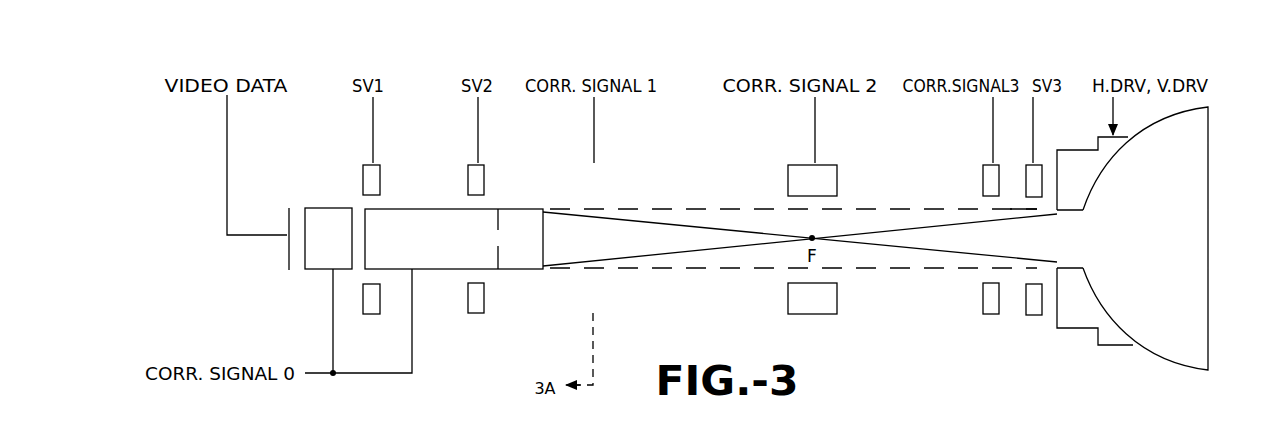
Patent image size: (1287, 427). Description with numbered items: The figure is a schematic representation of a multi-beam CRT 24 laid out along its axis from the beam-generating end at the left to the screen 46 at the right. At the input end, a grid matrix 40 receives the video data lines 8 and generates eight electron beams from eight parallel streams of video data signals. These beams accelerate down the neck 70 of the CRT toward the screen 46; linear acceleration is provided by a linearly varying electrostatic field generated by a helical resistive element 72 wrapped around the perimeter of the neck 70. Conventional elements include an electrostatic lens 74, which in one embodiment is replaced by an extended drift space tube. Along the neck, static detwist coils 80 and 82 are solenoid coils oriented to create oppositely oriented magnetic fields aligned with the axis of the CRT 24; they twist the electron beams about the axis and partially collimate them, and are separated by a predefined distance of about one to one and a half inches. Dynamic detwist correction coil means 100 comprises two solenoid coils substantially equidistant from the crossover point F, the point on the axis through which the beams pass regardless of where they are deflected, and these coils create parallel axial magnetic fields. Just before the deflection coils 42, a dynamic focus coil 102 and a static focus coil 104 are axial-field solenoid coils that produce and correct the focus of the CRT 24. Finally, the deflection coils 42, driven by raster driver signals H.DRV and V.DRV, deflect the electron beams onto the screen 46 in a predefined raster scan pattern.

The video data line 8 is at (233, 163).
The multi-beam CRT 24 is at (1189, 62).
The grid matrix 40 is at (287, 254).
The deflection coils 42 is at (1075, 330).
The screen 46 is at (1203, 320).
The neck 70 is at (603, 218).
The helical resistive element 72 is at (650, 272).
The electrostatic lens 74 is at (318, 245).
The static detwist coil 80 is at (378, 170).
The static detwist coil 82 is at (481, 170).
The dynamic detwist correction coil means 100 is at (832, 170).
The dynamic focus coil 102 is at (990, 182).
The static focus coil 104 is at (1038, 172).